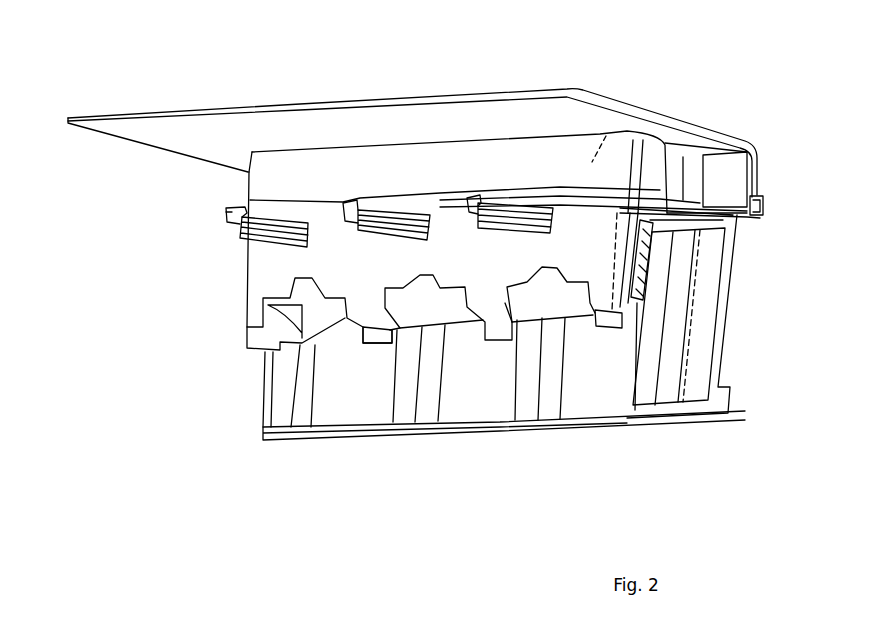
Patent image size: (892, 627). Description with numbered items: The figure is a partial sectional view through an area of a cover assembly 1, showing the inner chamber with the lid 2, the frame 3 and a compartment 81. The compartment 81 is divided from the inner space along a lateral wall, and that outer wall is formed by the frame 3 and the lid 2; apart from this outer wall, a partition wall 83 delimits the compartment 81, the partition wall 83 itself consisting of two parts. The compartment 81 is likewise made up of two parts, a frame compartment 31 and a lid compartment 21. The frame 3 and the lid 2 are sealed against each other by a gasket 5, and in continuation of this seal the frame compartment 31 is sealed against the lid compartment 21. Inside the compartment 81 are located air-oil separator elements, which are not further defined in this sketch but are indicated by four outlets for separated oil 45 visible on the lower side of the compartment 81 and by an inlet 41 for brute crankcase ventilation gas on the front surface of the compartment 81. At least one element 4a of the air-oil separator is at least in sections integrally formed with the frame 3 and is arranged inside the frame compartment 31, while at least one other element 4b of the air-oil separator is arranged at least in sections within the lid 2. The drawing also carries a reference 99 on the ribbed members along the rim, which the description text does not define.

The cover assembly 1 is at (110, 105).
The lid 2 is at (680, 122).
The frame 3 is at (722, 330).
The element of the air-oil separator 4a is at (620, 317).
The other element of the air-oil separator 4b is at (610, 130).
The gasket 5 is at (762, 215).
The lid compartment 21 is at (277, 197).
The frame compartment 31 is at (260, 270).
The inlet 41 is at (650, 270).
The outlets for separated oil 45 is at (363, 347).
The compartment 81 is at (123, 220).
The partition wall 83 is at (468, 257).
The ribbed clip 99 is at (213, 222).